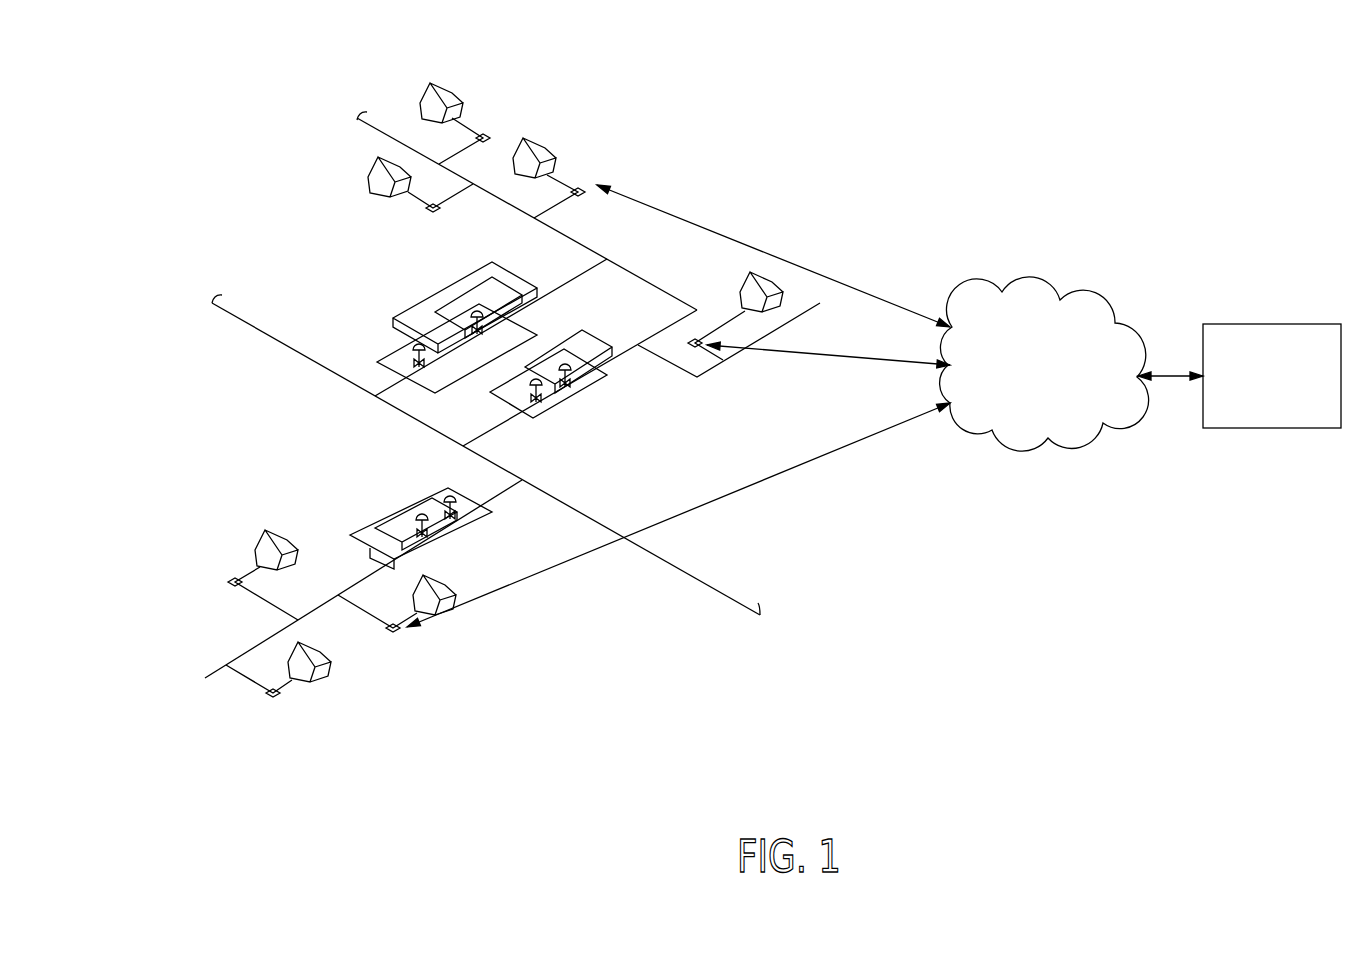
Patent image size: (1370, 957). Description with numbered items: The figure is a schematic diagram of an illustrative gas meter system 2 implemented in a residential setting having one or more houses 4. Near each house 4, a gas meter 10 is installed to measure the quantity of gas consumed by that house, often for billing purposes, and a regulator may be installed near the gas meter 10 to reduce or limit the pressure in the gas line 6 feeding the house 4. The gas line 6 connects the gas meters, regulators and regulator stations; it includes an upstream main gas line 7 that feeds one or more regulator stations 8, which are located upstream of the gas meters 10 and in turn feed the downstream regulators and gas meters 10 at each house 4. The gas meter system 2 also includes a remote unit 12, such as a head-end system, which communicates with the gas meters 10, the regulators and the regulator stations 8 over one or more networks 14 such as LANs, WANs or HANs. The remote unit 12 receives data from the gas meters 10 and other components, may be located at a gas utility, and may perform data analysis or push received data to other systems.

The gas meter system 2 is at (850, 103).
The house 4 is at (445, 88).
The gas line 6 is at (463, 150).
The upstream main gas line 7 is at (697, 580).
The regulator station 8 is at (475, 312).
The gas meter 10 is at (486, 134).
The remote unit 12 is at (1273, 324).
The network 14 is at (1035, 280).